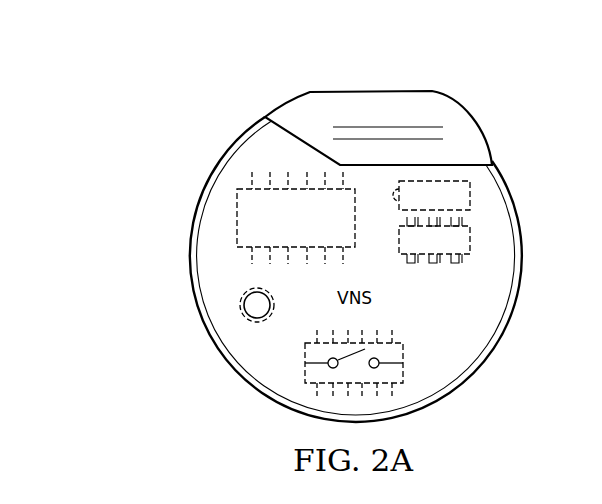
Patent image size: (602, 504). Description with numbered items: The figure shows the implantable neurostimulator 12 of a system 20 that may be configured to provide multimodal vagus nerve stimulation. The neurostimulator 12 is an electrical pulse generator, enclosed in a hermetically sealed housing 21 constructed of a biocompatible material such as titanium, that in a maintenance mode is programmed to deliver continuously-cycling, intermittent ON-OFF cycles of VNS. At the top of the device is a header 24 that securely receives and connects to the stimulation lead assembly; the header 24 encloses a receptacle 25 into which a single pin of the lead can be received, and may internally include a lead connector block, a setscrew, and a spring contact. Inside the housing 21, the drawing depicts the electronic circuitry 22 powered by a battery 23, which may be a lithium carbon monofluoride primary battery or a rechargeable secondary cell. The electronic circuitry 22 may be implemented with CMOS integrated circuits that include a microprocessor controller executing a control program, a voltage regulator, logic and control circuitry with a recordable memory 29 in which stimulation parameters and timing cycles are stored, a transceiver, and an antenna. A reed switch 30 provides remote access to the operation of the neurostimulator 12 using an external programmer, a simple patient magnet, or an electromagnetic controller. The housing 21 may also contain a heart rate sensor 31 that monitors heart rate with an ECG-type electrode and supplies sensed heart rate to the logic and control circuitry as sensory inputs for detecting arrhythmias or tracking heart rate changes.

The system 20 is at (386, 230).
The neurostimulator 12 is at (237, 136).
The header 24 is at (417, 109).
The receptacle 25 is at (510, 150).
The electronic circuitry 22 is at (237, 210).
The battery 23 is at (470, 193).
The recordable memory 29 is at (470, 239).
The heart rate sensor 31 is at (239, 303).
The reed switch 30 is at (403, 358).
The housing 21 is at (278, 348).